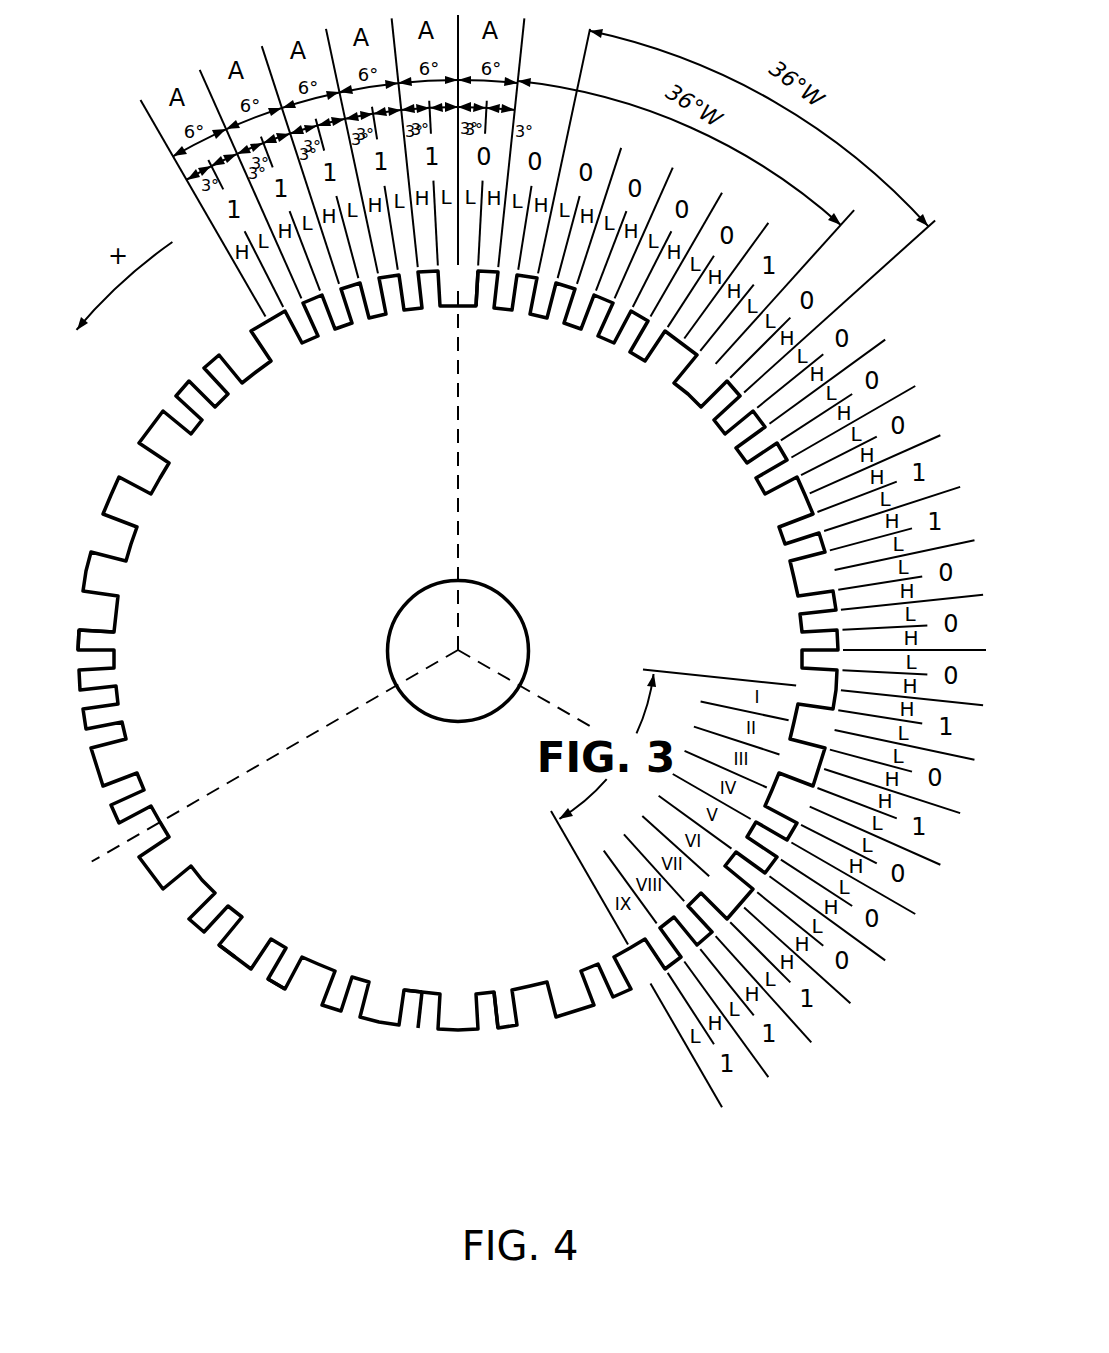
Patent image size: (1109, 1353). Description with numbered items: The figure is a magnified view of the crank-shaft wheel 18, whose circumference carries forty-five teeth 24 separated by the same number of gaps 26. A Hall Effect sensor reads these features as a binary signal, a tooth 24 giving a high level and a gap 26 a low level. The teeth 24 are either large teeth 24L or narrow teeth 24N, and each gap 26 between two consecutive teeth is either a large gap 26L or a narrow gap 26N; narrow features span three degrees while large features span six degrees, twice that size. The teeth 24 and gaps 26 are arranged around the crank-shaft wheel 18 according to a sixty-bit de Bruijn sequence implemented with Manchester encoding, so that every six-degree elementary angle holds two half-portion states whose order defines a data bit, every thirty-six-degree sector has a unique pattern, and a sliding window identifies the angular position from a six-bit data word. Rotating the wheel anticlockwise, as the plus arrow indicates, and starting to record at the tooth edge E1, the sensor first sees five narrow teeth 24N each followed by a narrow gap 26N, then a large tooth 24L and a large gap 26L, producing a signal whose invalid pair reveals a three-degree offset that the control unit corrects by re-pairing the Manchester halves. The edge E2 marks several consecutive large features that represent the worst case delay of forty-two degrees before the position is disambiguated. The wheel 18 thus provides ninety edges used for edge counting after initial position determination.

The crank-shaft wheel 18 is at (477, 781).
The teeth 24 is at (132, 977).
The large teeth 24L is at (237, 960).
The narrow teeth 24N is at (283, 980).
The gaps 26 is at (283, 1065).
The large gap 26L is at (423, 1020).
The narrow gap 26N is at (490, 1022).
The tooth edge E1 is at (474, 292).
The edge E2 is at (97, 620).